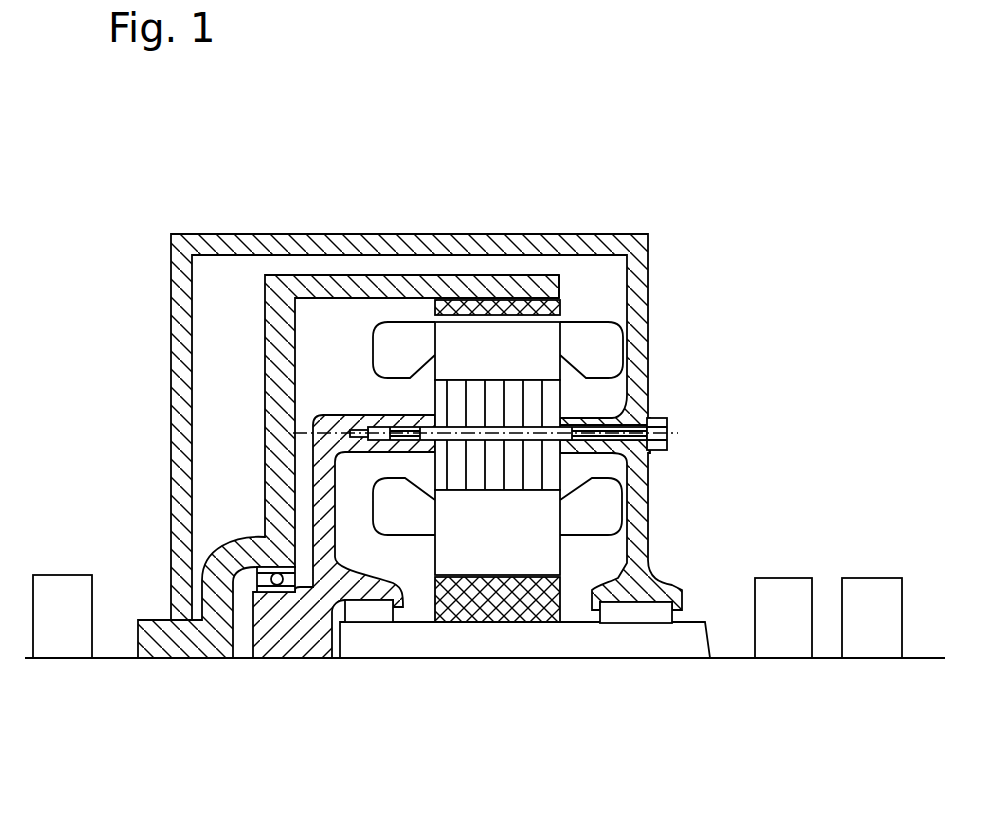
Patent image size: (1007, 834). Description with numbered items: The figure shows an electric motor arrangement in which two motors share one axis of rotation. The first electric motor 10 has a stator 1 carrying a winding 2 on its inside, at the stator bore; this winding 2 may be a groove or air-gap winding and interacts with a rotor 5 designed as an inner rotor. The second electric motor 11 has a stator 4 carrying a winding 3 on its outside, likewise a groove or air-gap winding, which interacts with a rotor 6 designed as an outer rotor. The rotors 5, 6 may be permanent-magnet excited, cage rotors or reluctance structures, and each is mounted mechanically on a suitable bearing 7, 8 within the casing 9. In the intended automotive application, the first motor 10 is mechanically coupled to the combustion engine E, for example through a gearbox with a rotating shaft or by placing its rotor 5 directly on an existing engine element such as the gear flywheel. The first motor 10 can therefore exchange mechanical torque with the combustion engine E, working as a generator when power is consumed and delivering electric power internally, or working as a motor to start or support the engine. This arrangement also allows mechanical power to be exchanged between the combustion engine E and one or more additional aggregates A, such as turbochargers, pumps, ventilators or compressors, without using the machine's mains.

The stator 1 is at (484, 540).
The winding 2 is at (593, 497).
The winding 3 is at (588, 345).
The stator 4 is at (492, 355).
The rotor 5 is at (555, 647).
The rotor 6 is at (414, 283).
The bearing 7 is at (643, 613).
The bearing 8 is at (272, 587).
The casing 9 is at (290, 243).
The first electric motor 10 is at (367, 678).
The second electric motor 11 is at (567, 285).
The aggregate A is at (62, 640).
The combustion engine E is at (865, 645).